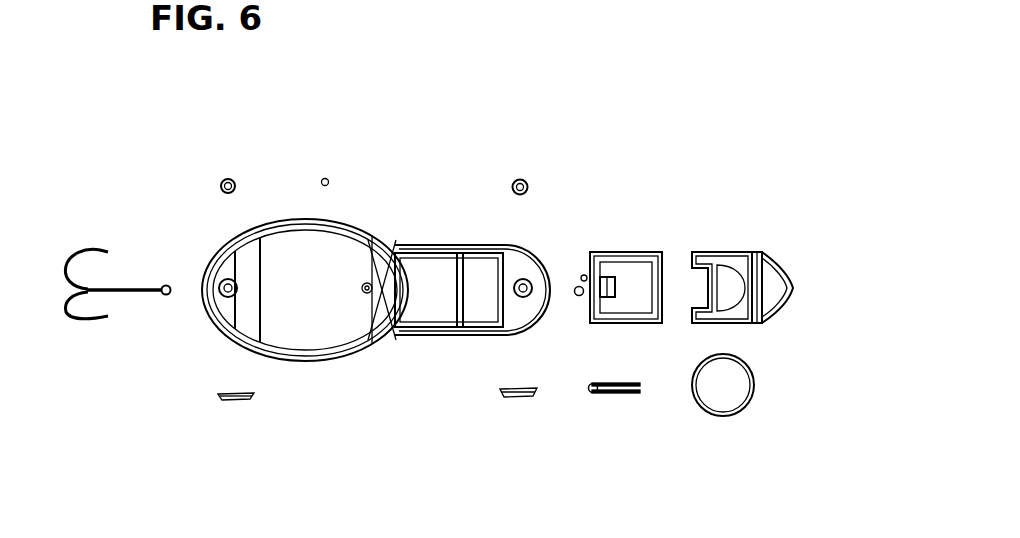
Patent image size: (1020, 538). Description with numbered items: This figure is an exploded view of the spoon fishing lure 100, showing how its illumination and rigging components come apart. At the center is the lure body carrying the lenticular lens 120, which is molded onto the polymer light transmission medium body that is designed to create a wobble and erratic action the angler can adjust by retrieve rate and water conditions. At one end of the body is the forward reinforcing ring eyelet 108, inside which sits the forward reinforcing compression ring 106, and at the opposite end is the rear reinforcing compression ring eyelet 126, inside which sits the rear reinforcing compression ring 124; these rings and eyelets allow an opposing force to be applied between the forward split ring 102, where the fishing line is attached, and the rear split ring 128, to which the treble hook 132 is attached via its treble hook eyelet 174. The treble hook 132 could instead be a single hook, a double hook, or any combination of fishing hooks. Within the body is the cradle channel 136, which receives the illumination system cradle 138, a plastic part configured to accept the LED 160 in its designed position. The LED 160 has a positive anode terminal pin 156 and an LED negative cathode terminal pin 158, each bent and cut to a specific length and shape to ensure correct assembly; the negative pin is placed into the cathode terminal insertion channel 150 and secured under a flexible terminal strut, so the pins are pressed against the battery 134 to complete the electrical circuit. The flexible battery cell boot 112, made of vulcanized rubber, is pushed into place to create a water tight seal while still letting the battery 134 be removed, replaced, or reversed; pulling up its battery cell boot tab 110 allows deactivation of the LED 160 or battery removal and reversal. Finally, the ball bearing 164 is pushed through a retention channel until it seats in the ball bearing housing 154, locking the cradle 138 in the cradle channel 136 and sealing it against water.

The spoon fishing lure 100 is at (422, 146).
The forward split ring 102 is at (522, 397).
The forward reinforcing compression ring 106 is at (520, 179).
The forward reinforcing ring eyelet 108 is at (527, 280).
The battery cell boot tab 110 is at (787, 280).
The battery cell boot 112 is at (757, 252).
The lenticular lens 120 is at (302, 293).
The rear reinforcing compression ring 124 is at (228, 178).
The rear reinforcing compression ring eyelet 126 is at (217, 272).
The rear split ring 128 is at (237, 397).
The treble hook 132 is at (68, 298).
The battery 134 is at (723, 384).
The cradle channel 136 is at (425, 285).
The illumination system cradle 138 is at (638, 285).
The cathode terminal insertion channel 150 is at (595, 253).
The ball bearing housing 154 is at (578, 296).
The positive anode terminal pin 156 is at (628, 381).
The LED negative cathode terminal pin 158 is at (627, 394).
The light emitting diode (LED) 160 is at (591, 392).
The ball bearing 164 is at (325, 178).
The treble hook eyelet 174 is at (165, 297).